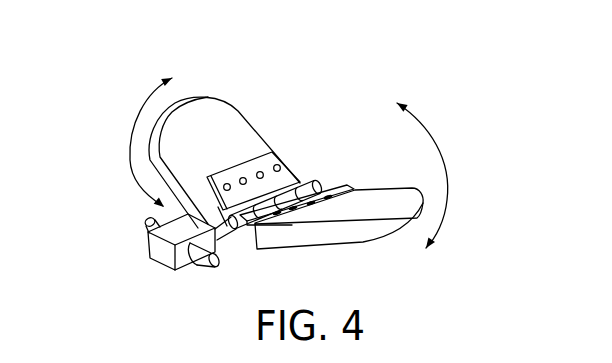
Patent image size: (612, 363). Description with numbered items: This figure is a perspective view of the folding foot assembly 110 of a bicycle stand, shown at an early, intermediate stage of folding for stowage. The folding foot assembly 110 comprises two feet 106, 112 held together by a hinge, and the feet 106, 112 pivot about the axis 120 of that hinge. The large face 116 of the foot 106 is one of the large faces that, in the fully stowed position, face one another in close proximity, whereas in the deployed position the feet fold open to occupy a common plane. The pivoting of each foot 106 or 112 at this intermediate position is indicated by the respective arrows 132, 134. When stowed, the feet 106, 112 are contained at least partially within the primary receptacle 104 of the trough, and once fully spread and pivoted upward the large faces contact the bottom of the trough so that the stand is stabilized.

The primary receptacle 104 is at (392, 214).
The foot 106 is at (315, 240).
The folding foot assembly 110 is at (318, 147).
The foot 112 is at (263, 133).
The large face 116 is at (220, 139).
The axis 120 is at (395, 161).
The arrow 132 is at (162, 84).
The arrow 134 is at (447, 210).